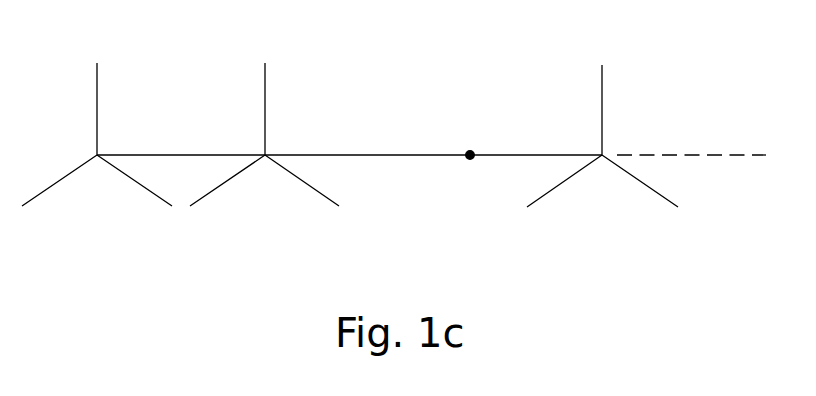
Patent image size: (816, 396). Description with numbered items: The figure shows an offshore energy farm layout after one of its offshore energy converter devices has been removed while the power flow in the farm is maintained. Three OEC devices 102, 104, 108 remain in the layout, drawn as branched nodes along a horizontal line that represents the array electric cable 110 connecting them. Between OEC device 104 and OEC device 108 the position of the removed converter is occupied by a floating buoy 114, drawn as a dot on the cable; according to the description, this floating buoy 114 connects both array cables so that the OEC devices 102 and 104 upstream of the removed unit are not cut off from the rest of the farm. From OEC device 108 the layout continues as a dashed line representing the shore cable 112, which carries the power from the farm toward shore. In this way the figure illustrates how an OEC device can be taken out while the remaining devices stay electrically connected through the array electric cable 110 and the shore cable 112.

The OEC device 102 is at (97, 172).
The OEC device 104 is at (265, 172).
The OEC device 108 is at (602, 168).
The array electric cable 110 is at (187, 152).
The shore cable 112 is at (687, 151).
The floating buoy 114 is at (470, 165).